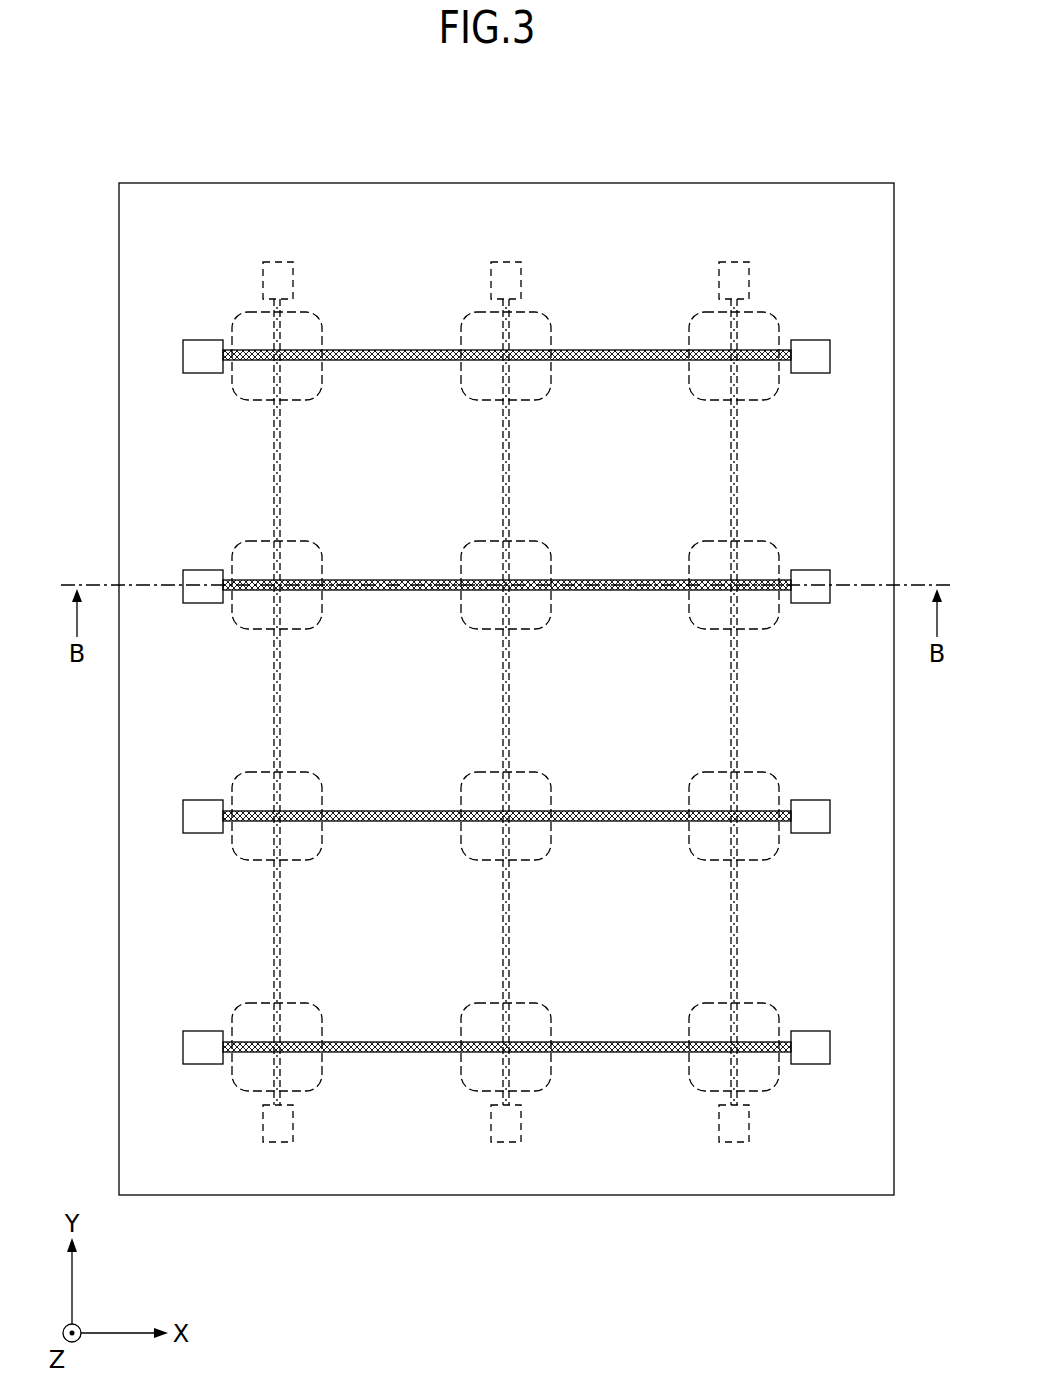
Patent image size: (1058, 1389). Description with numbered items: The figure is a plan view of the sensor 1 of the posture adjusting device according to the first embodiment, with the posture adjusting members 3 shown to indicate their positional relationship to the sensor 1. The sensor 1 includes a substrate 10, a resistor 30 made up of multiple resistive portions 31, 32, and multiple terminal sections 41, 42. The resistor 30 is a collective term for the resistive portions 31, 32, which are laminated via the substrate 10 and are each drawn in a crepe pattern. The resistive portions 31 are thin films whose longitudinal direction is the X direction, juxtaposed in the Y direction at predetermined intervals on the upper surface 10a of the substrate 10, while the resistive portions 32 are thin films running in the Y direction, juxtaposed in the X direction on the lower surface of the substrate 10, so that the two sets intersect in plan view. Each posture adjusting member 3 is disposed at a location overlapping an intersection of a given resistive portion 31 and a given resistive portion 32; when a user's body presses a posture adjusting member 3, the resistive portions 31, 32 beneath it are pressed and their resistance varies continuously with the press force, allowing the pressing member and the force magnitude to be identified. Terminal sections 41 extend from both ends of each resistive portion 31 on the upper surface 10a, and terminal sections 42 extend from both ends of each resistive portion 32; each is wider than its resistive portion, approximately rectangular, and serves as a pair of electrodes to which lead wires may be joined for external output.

The sensor 1 is at (70, 93).
The substrate 10 is at (110, 339).
The upper surface 10a is at (140, 1116).
The resistor 30 is at (453, 122).
The resistive portion 31 is at (360, 348).
The resistive portion 32 is at (495, 418).
The terminal section 41 is at (810, 350).
The terminal section 42 is at (733, 275).
The posture adjusting member 3 is at (775, 1092).